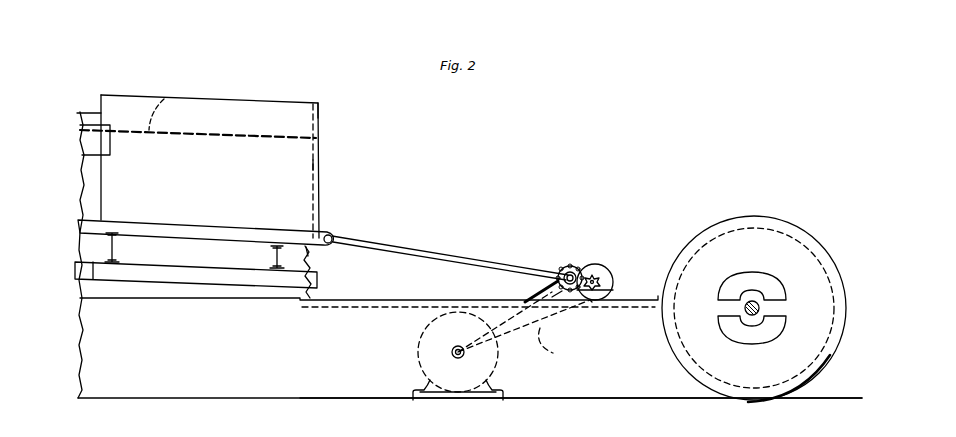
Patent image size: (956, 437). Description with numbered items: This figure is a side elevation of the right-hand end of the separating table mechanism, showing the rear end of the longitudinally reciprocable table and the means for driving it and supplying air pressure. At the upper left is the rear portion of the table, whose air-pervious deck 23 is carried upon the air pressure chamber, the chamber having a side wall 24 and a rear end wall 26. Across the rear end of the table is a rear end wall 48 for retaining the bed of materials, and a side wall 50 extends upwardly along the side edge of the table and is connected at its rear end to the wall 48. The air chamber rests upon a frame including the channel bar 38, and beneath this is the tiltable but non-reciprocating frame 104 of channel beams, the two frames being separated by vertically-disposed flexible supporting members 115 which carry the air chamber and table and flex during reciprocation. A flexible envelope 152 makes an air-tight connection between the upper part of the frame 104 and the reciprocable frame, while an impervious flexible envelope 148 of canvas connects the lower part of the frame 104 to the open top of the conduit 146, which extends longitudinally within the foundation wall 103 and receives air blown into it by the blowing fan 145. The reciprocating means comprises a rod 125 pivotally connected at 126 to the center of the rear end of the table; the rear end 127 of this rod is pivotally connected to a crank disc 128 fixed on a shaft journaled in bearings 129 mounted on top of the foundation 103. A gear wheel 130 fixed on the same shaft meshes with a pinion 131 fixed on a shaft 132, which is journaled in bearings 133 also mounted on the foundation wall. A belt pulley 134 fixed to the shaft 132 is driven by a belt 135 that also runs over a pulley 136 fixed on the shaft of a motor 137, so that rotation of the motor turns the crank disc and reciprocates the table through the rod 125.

The air-pervious deck 23 is at (164, 97).
The side wall 50 is at (236, 110).
The rear end wall 48 is at (322, 117).
The side wall of air chamber 24 is at (268, 165).
The rear end wall of air chamber 26 is at (320, 165).
The frame channel bar 38 is at (205, 211).
The pivotal connection 126 is at (333, 234).
The rod 125 is at (415, 250).
The flexible supporting member 115 is at (118, 250).
The flexible envelope 152 is at (312, 258).
The impervious flexible envelope 148 is at (310, 292).
The frame 104 is at (205, 272).
The foundation wall 103 is at (285, 392).
The gear wheel 130 is at (572, 268).
The rear end of rod 127 is at (562, 271).
The belt pulley 134 is at (598, 267).
The pinion 131 is at (604, 272).
The shaft 132 is at (600, 283).
The crank disc 128 is at (546, 294).
The bearings 129 is at (553, 298).
The bearings 133 is at (590, 301).
The pulley 136 is at (428, 336).
The motor 137 is at (421, 364).
The belt 135 is at (548, 349).
The conduit 146 is at (648, 385).
The blowing fan 145 is at (752, 220).